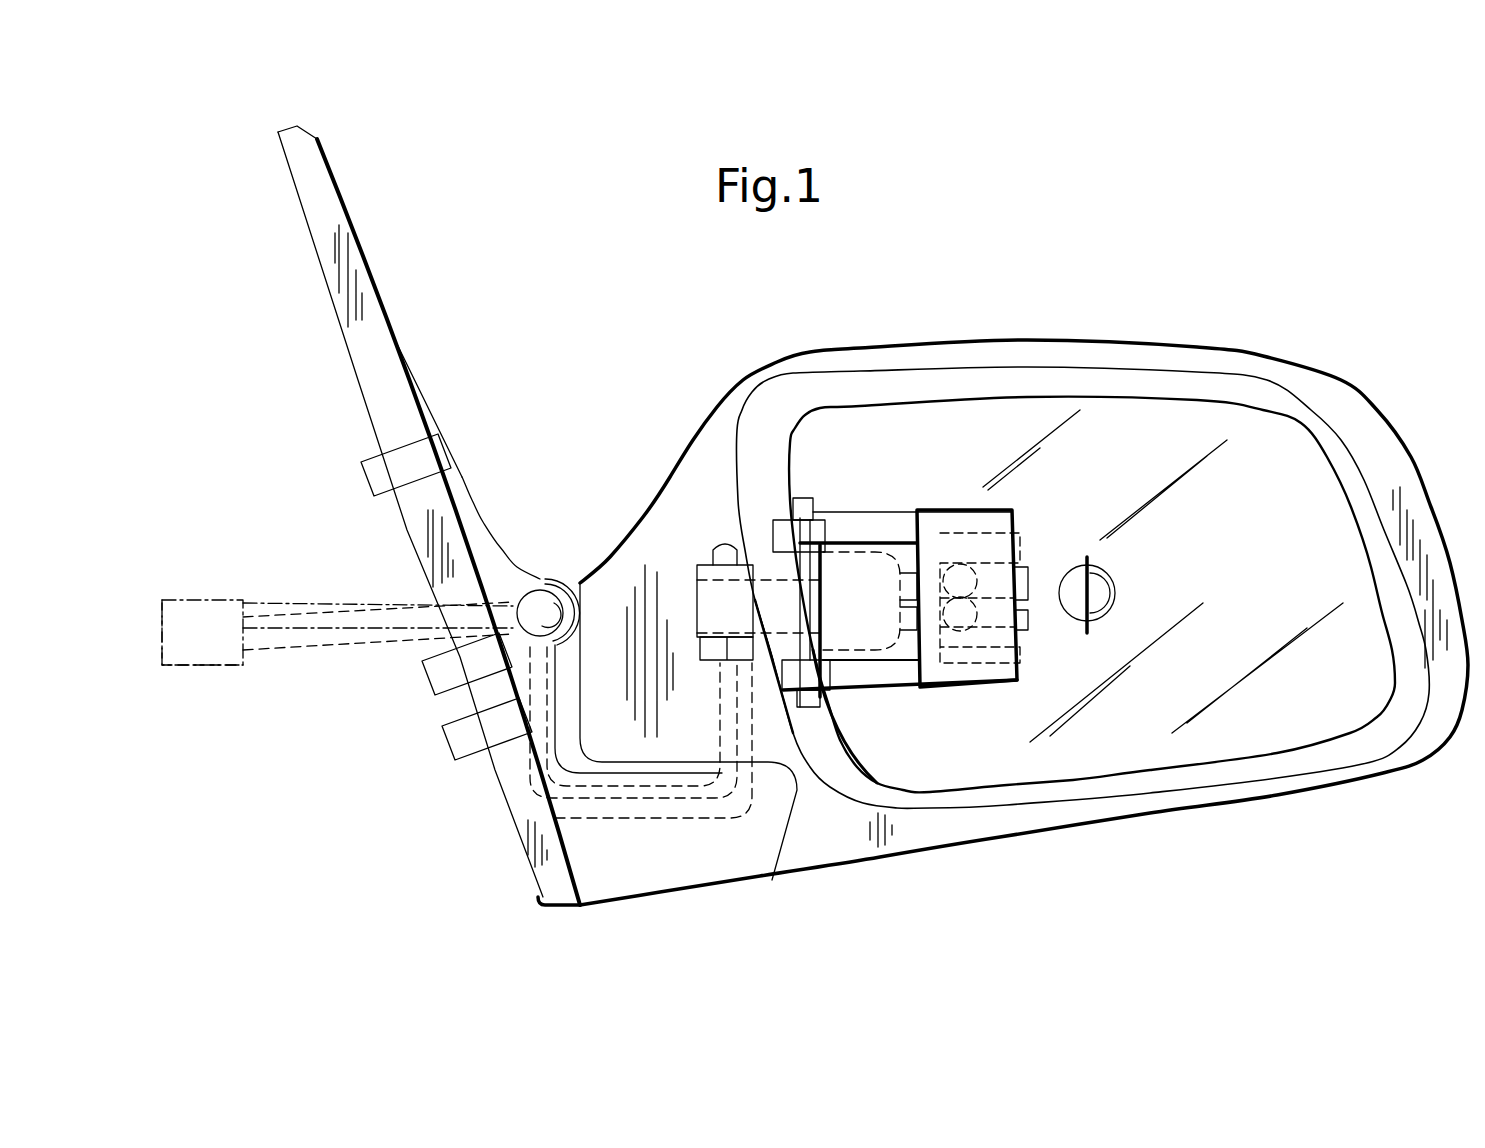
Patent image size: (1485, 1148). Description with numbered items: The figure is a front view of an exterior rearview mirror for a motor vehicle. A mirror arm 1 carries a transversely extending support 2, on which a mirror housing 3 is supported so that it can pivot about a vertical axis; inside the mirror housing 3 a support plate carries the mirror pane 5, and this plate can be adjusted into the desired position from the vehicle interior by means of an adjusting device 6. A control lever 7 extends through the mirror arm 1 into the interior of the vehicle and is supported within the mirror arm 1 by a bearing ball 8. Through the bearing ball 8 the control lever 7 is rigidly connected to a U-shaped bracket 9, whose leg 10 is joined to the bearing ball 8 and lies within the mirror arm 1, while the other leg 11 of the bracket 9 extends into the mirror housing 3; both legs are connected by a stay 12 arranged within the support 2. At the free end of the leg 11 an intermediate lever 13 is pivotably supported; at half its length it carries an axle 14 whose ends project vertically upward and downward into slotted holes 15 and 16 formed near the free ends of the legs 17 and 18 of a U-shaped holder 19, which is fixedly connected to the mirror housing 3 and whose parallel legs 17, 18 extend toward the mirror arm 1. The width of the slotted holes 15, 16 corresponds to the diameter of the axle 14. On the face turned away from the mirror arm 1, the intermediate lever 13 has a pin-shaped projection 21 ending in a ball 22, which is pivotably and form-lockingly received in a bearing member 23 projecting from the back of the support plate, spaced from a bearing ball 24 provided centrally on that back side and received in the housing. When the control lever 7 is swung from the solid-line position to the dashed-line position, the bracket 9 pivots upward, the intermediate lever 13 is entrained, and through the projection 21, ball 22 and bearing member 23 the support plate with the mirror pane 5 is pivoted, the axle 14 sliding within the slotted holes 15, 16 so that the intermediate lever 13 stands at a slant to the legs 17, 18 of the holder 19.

The mirror arm 1 is at (313, 235).
The support 2 is at (627, 883).
The mirror housing 3 is at (957, 346).
The mirror pane 5 is at (1272, 713).
The adjusting device 6 is at (349, 644).
The control lever 7 is at (260, 611).
The bearing ball 8 is at (547, 610).
The U-shaped bracket 9 is at (612, 820).
The leg 10 is at (528, 775).
The leg 11 is at (725, 753).
The stay 12 is at (587, 807).
The intermediate control member (lever) 13 is at (720, 597).
The axle 14 is at (822, 560).
The slotted hole 15 is at (793, 570).
The slotted hole 16 is at (767, 640).
The leg 17 is at (833, 530).
The leg 18 is at (883, 677).
The U-shaped holder 19 is at (920, 510).
The pin-shaped projection 21 is at (912, 626).
The ball 22 is at (962, 645).
The bearing member 23 is at (1018, 546).
The bearing ball 24 is at (1113, 587).